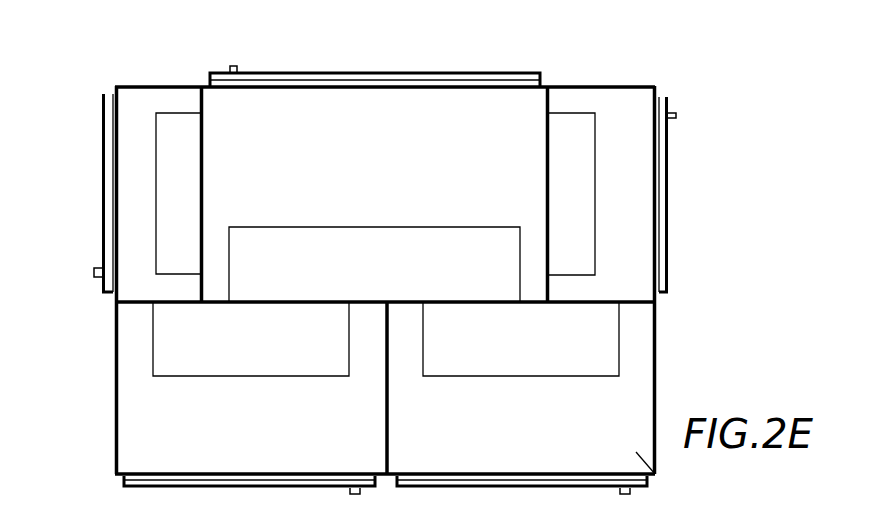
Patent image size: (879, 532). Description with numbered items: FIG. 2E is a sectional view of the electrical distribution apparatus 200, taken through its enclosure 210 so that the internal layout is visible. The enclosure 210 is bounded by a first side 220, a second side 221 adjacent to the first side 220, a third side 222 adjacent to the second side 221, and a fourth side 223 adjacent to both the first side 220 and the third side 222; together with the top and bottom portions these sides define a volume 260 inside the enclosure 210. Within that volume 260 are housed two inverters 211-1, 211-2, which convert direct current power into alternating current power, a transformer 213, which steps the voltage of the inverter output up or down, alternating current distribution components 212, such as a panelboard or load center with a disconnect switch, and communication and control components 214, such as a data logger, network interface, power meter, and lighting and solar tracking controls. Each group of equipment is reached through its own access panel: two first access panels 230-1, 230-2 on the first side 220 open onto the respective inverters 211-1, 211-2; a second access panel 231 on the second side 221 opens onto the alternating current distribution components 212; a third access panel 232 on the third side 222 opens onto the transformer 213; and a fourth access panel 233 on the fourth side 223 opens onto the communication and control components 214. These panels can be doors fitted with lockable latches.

The electrical distribution apparatus 200 is at (52, 78).
The enclosure 210 is at (170, 54).
The communication and control components 214 is at (156, 122).
The third side 222 is at (574, 86).
The alternating current distribution components 212 is at (595, 178).
The transformer 213 is at (360, 227).
The third access panel 232 is at (455, 72).
The fourth access panel 233 is at (102, 150).
The second access panel 231 is at (668, 183).
The fourth side 223 is at (115, 340).
The second side 221 is at (656, 344).
The first side 220 is at (385, 478).
The inverter 211-1 is at (240, 376).
The inverter 211-2 is at (501, 376).
The first access panel 230-1 is at (240, 488).
The first access panel 230-2 is at (545, 490).
The volume 260 is at (657, 478).